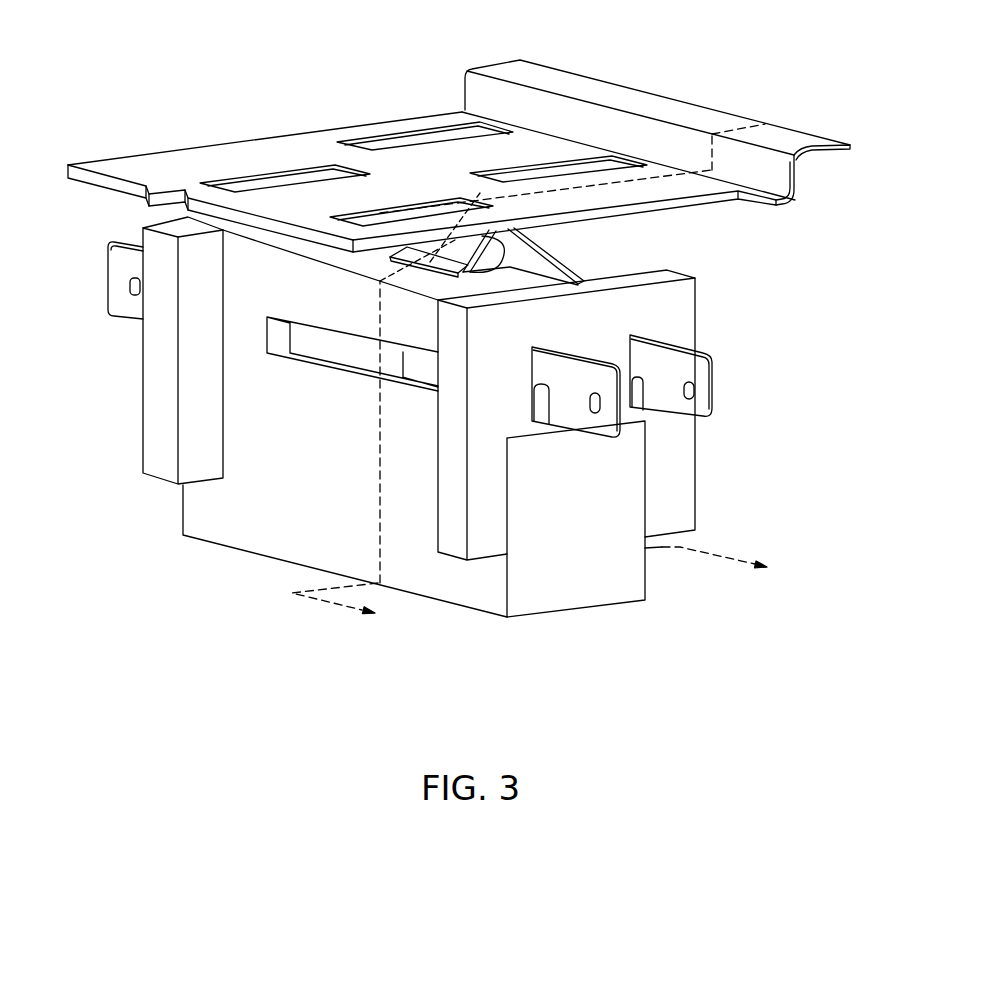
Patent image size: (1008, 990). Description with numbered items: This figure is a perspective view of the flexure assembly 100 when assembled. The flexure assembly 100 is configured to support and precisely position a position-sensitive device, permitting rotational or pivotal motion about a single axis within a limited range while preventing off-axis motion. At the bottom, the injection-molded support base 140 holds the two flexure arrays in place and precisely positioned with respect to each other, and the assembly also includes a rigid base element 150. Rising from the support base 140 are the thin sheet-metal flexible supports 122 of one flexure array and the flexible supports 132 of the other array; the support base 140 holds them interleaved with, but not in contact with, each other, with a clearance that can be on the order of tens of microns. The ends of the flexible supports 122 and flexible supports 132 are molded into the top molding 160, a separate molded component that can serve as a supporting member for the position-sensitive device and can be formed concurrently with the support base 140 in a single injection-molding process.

The flexure assembly 100 is at (232, 84).
The flexible supports 122 is at (547, 246).
The flexible supports 132 is at (452, 282).
The support base 140 is at (609, 331).
The rigid base element 150 is at (606, 522).
The top molding 160 is at (438, 183).